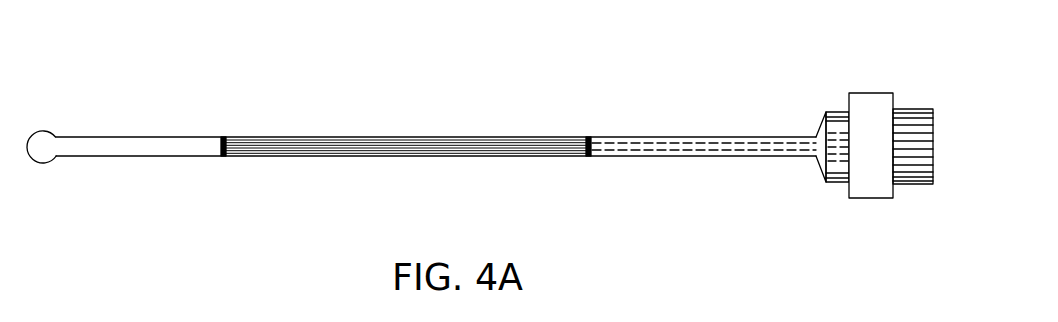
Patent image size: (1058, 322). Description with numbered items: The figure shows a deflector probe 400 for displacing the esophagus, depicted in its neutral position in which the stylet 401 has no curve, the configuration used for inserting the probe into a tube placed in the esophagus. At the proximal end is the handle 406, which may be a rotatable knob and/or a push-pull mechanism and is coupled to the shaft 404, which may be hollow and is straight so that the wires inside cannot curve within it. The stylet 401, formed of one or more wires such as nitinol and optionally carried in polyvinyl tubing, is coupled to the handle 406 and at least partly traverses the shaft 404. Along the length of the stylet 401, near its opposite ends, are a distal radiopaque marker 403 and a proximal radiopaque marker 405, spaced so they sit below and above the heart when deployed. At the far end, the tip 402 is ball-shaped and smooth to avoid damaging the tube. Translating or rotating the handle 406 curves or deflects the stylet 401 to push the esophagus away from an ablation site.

The deflector probe 400 is at (756, 48).
The stylet 401 is at (585, 117).
The tip 402 is at (40, 149).
The distal radiopaque marker 403 is at (223, 158).
The shaft 404 is at (712, 157).
The proximal radiopaque marker 405 is at (589, 158).
The handle 406 is at (870, 200).